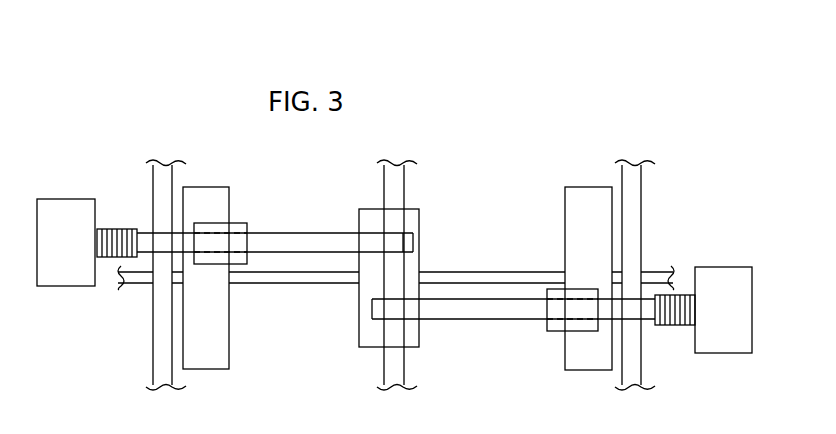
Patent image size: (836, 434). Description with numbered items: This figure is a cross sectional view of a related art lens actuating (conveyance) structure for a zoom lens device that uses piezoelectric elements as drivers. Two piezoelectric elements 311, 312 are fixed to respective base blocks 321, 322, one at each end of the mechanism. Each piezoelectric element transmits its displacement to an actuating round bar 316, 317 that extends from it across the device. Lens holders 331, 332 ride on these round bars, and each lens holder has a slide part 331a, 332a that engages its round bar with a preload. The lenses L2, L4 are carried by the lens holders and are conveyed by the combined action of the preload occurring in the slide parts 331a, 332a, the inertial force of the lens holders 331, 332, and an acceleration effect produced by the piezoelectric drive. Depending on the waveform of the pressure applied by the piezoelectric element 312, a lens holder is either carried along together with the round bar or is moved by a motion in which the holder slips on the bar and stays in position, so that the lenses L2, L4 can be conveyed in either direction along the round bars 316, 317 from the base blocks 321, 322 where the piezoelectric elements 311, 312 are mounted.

The piezoelectric element 311 is at (112, 227).
The piezoelectric element 312 is at (680, 292).
The actuating round bar 316 is at (294, 235).
The actuating round bar 317 is at (474, 320).
The base block 321 is at (65, 288).
The base block 322 is at (716, 356).
The lens holder 331 is at (208, 370).
The slide part 331a is at (241, 223).
The lens holder 332 is at (580, 187).
The slide part 332a is at (548, 334).
The lens L2 is at (232, 307).
The lens L4 is at (564, 219).